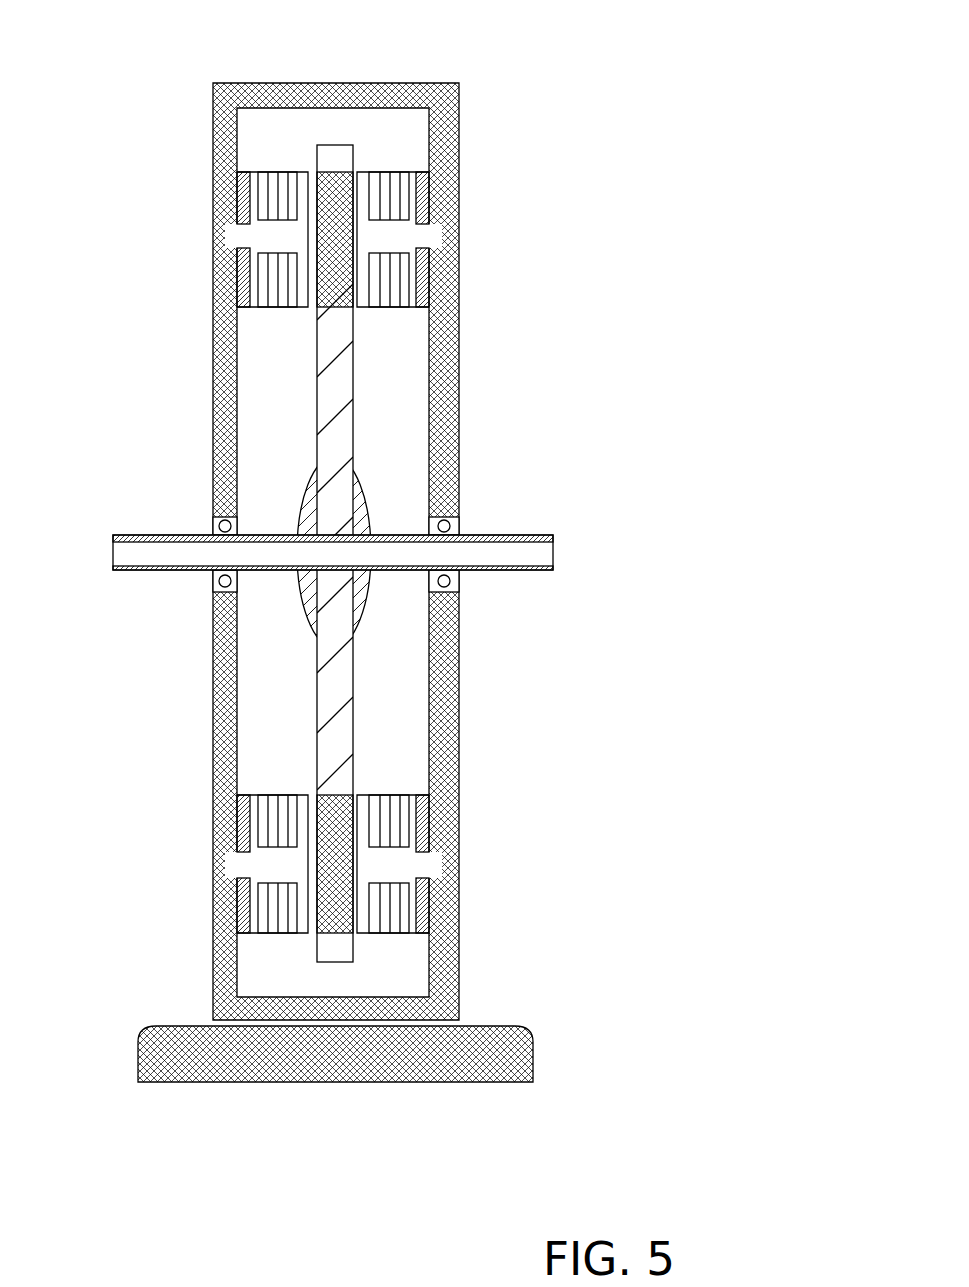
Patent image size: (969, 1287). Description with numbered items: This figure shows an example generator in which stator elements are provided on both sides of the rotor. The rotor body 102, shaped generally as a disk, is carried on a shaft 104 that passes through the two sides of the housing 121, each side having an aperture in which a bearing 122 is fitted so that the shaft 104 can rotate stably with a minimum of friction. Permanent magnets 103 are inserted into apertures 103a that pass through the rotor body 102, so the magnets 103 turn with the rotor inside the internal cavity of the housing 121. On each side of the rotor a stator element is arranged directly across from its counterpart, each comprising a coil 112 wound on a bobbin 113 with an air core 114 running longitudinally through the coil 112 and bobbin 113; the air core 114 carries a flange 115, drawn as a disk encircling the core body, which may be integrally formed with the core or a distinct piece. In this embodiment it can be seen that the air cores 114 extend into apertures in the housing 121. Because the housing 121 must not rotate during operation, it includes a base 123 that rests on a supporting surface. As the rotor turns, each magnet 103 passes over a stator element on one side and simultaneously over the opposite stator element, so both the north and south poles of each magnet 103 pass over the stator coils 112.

The rotor body 102 is at (343, 141).
The permanent magnet 103 is at (318, 182).
The aperture 103a is at (306, 314).
The shaft 104 is at (551, 537).
The coil 112 is at (398, 176).
The bobbin 113 is at (249, 274).
The air core 114 is at (443, 240).
The flange 115 is at (236, 201).
The housing 121 is at (462, 902).
The bearing 122 is at (216, 583).
The base 123 is at (450, 1038).